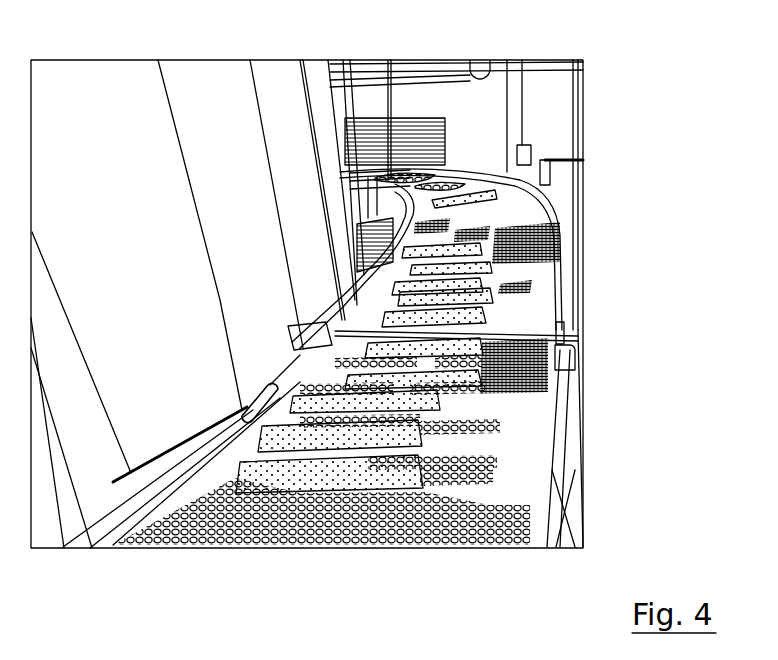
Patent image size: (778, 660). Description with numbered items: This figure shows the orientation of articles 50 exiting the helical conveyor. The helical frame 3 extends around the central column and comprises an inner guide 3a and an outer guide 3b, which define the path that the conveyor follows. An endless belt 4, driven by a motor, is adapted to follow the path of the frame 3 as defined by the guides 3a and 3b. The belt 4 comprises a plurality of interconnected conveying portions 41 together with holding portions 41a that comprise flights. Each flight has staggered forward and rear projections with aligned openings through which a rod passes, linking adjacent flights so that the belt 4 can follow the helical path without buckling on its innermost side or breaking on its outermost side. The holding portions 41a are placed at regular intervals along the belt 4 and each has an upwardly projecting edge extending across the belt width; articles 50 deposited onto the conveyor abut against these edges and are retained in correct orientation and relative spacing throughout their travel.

The helical frame 3 is at (180, 427).
The inner guide 3a is at (238, 414).
The outer guide 3b is at (555, 437).
The endless belt 4 is at (170, 540).
The conveying portions 41 is at (578, 338).
The holding portions 41a is at (487, 470).
The articles 50 is at (340, 485).